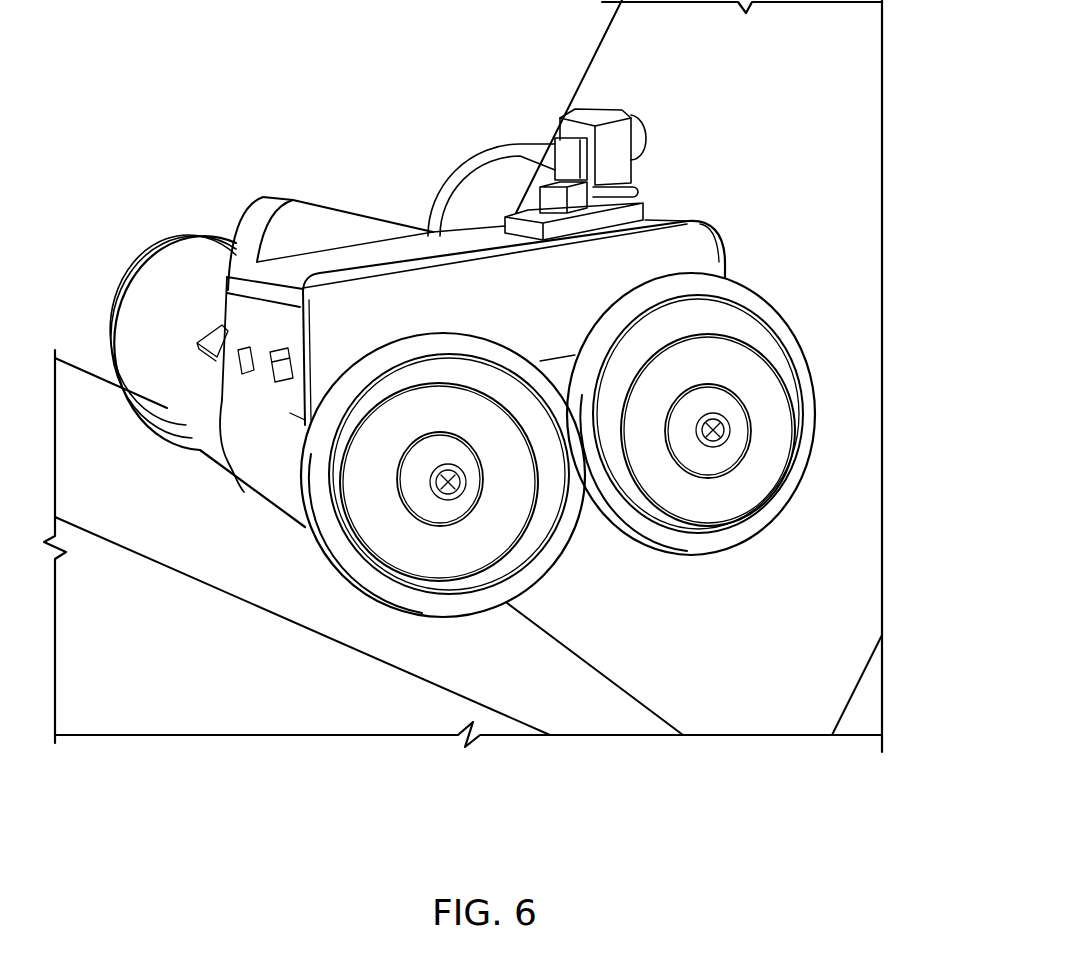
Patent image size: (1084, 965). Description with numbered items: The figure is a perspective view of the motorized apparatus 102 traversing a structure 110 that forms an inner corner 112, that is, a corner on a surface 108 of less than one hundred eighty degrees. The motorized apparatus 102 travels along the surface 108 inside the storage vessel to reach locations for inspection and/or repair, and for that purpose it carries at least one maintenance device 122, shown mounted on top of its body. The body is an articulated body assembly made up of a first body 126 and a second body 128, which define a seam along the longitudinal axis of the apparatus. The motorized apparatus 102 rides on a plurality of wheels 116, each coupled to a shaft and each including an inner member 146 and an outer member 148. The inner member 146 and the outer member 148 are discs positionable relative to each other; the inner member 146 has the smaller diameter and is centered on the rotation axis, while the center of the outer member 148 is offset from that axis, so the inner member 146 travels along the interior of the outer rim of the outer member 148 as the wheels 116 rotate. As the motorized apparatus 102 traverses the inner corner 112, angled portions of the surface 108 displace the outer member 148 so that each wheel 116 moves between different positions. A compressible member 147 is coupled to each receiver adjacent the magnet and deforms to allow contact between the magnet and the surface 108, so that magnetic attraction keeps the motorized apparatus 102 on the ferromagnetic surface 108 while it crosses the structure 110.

The motorized apparatus 102 is at (178, 137).
The surface 108 is at (210, 567).
The structure 110 is at (848, 598).
The inner corner 112 is at (640, 757).
The wheel 116 is at (330, 357).
The maintenance device 122 is at (650, 143).
The first body 126 is at (315, 220).
The second body 128 is at (697, 242).
The inner member 146 is at (377, 512).
The compressible member 147 is at (197, 287).
The outer member 148 is at (428, 605).